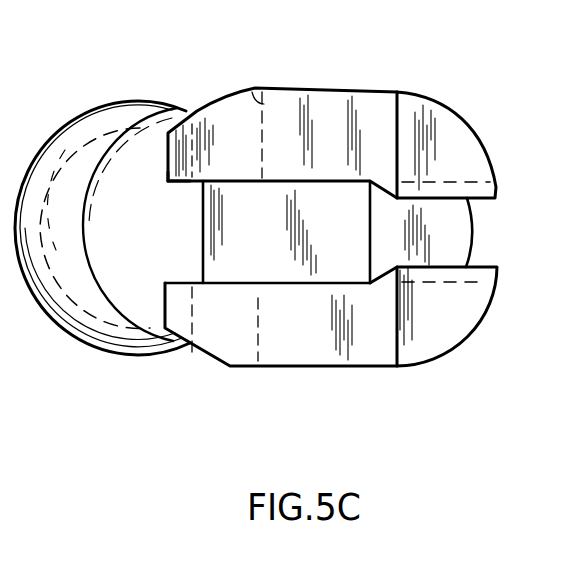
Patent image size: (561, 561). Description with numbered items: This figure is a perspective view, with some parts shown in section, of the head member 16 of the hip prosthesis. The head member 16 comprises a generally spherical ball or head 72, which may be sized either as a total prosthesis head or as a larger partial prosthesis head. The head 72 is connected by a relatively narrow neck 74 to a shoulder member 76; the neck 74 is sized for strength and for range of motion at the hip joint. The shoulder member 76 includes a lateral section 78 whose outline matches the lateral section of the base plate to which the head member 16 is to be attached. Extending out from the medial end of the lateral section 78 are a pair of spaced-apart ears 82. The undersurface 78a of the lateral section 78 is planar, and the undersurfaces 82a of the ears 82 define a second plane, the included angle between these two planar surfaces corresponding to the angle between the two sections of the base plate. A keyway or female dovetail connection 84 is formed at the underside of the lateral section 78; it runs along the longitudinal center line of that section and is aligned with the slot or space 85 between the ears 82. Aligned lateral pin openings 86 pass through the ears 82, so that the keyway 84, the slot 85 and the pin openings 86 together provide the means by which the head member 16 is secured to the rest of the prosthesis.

The head member 16 is at (410, 84).
The ball or head 72 is at (103, 103).
The neck 74 is at (172, 108).
The shoulder member 76 is at (331, 86).
The lateral section 78 is at (483, 306).
The undersurface 78a is at (437, 126).
The ears 82 is at (198, 111).
The undersurfaces 82a is at (206, 116).
The keyway or female dovetail connection 84 is at (483, 201).
The slot or space 85 is at (185, 182).
The lateral pin openings 86 is at (254, 85).